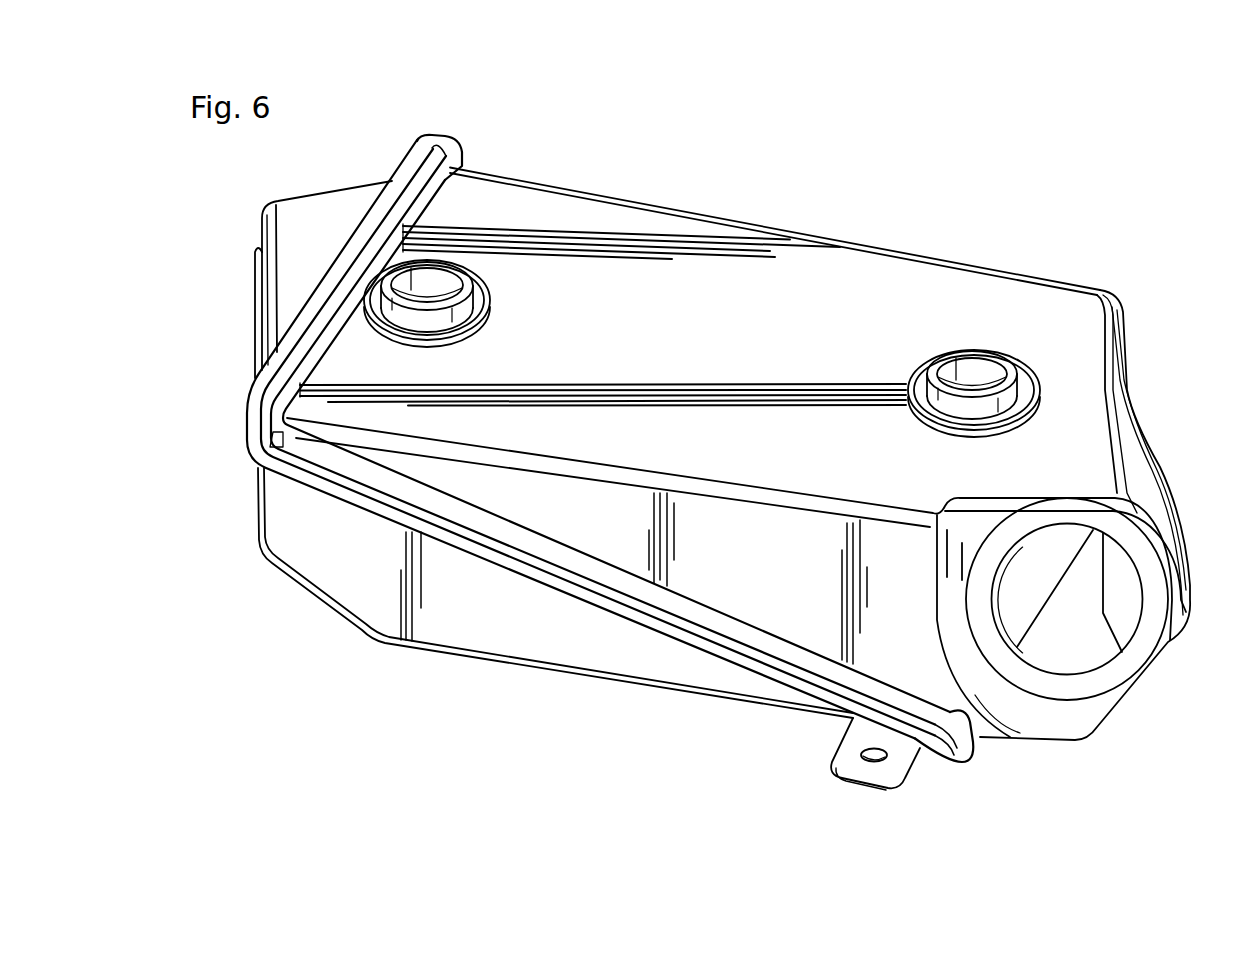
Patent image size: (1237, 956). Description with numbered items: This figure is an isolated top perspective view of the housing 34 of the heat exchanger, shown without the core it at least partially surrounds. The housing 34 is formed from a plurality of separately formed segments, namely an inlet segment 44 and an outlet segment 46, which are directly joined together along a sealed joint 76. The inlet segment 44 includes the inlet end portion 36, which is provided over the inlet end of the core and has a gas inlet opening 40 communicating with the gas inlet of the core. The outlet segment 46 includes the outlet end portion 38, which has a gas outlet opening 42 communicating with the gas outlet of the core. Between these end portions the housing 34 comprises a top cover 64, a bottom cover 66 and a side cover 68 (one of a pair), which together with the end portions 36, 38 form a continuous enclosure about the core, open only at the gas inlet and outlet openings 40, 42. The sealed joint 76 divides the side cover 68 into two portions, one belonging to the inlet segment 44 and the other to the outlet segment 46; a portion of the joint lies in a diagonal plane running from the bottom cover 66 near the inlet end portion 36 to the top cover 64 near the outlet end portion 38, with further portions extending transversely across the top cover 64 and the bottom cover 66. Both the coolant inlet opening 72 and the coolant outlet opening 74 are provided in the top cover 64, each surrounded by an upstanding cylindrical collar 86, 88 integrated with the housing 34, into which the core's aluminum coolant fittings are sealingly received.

The housing 34 is at (752, 217).
The inlet end portion 36 is at (1153, 460).
The outlet end portion 38 is at (302, 193).
The gas inlet opening 40 is at (1080, 634).
The gas outlet opening 42 is at (253, 277).
The inlet segment 44 is at (729, 321).
The outlet segment 46 is at (508, 638).
The top cover 64 is at (870, 270).
The bottom cover 66 is at (443, 650).
The side cover 68 is at (752, 572).
The coolant inlet opening 72 is at (432, 277).
The coolant outlet opening 74 is at (970, 372).
The sealed joint 76 is at (348, 492).
The cylindrical collar 86 is at (464, 270).
The cylindrical collar 88 is at (1010, 365).